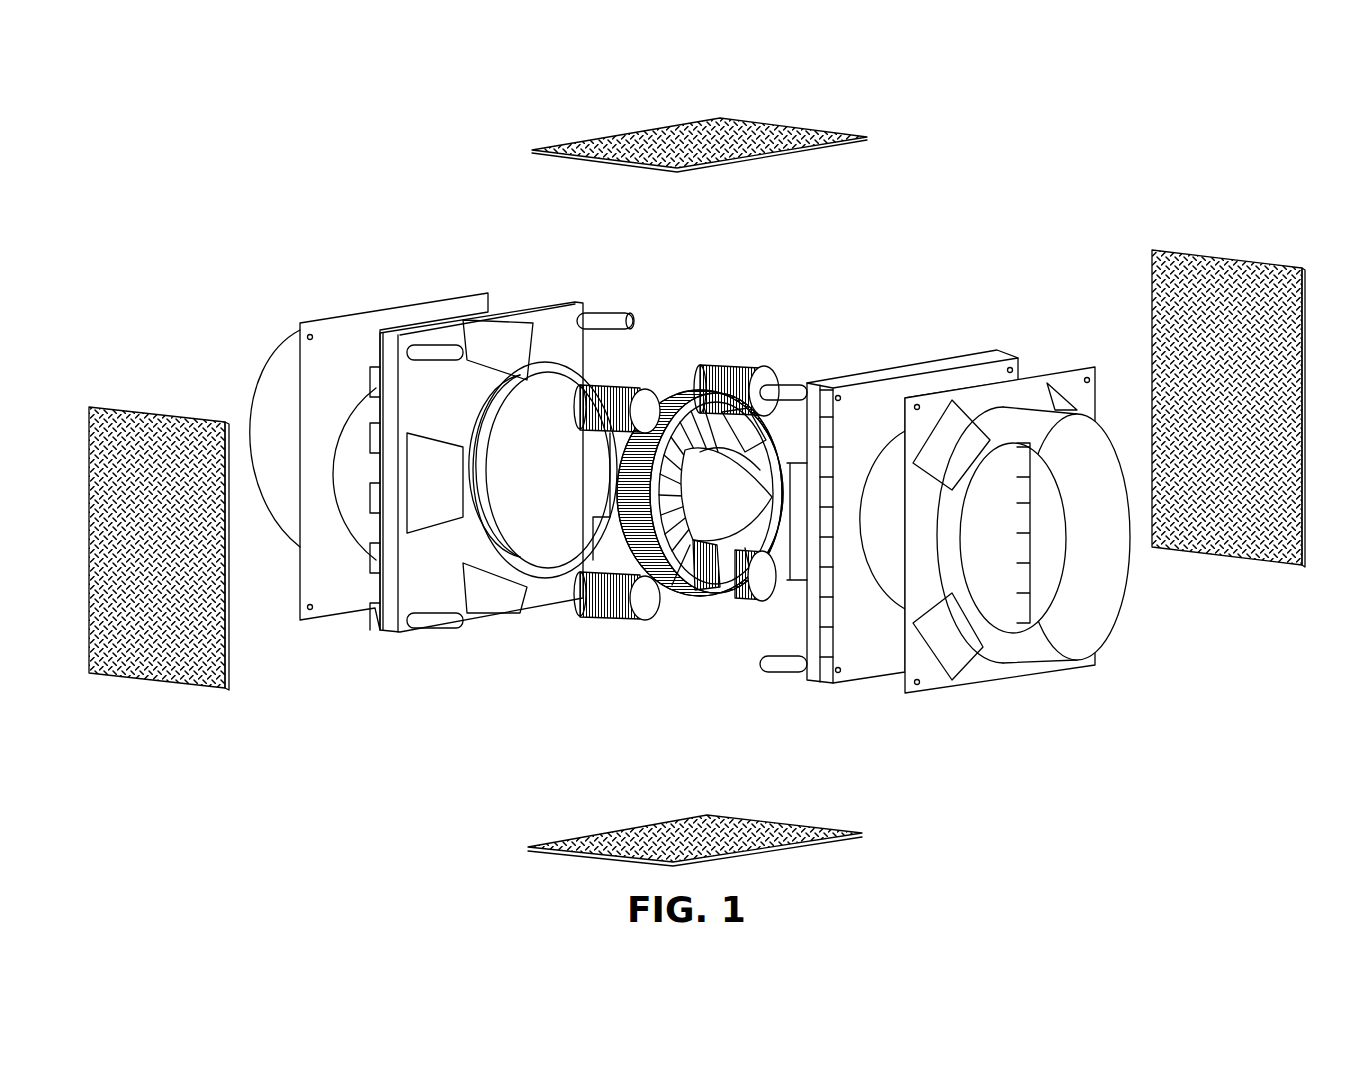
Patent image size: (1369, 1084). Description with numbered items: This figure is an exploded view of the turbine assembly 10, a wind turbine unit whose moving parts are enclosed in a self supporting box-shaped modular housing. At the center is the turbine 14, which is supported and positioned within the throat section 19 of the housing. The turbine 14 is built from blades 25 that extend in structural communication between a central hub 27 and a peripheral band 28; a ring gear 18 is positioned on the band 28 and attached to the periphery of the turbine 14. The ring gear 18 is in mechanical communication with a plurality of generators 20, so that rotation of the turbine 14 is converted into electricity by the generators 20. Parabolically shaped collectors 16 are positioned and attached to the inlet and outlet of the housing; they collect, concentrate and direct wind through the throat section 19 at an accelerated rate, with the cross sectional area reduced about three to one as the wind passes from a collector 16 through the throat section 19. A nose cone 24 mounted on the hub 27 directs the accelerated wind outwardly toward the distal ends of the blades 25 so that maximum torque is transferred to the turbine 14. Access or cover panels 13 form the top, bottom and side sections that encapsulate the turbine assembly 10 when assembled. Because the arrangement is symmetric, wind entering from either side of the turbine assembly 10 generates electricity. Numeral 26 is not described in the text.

The turbine assembly 10 is at (480, 205).
The access or cover panels 13 is at (1152, 272).
The turbine 14 is at (742, 494).
The parabolically shaped collectors 16 is at (1103, 593).
The ring gear 18 is at (675, 393).
The throat section 19 is at (560, 560).
The generators 20 is at (602, 618).
The nose cone 24 is at (708, 530).
The blades 25 is at (683, 470).
The back plate 26 is at (370, 630).
The hub 27 is at (707, 443).
The peripheral band 28 is at (710, 590).